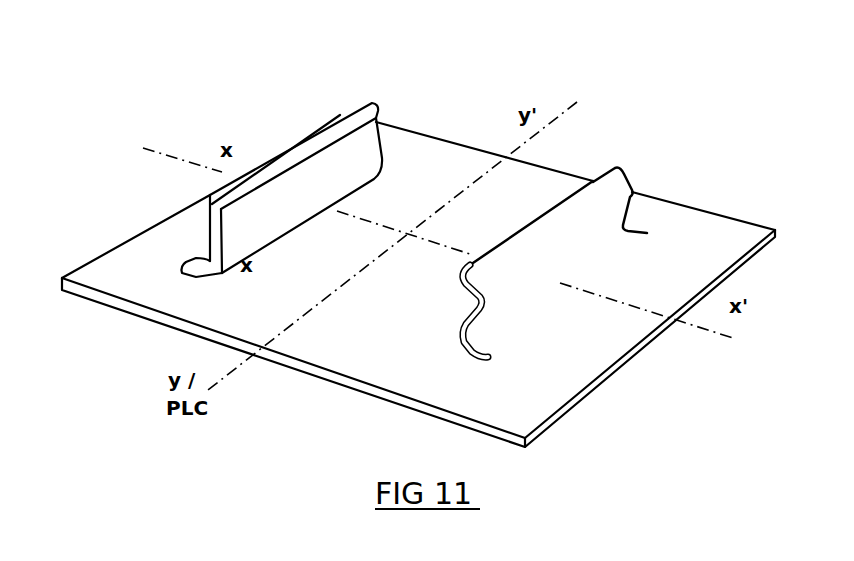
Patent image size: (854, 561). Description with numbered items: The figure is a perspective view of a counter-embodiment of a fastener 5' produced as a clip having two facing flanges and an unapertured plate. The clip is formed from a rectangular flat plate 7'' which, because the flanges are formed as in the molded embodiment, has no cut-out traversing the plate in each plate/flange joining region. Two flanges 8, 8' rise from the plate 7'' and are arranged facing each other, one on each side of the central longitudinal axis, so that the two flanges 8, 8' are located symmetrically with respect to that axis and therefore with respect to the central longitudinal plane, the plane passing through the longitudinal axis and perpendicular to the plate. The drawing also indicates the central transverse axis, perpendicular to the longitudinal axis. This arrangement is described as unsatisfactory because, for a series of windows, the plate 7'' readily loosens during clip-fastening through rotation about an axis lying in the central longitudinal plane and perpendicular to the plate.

The fastener 5' is at (433, 195).
The flange 8 is at (239, 190).
The flange 8' is at (555, 298).
The plate 7'' is at (418, 286).